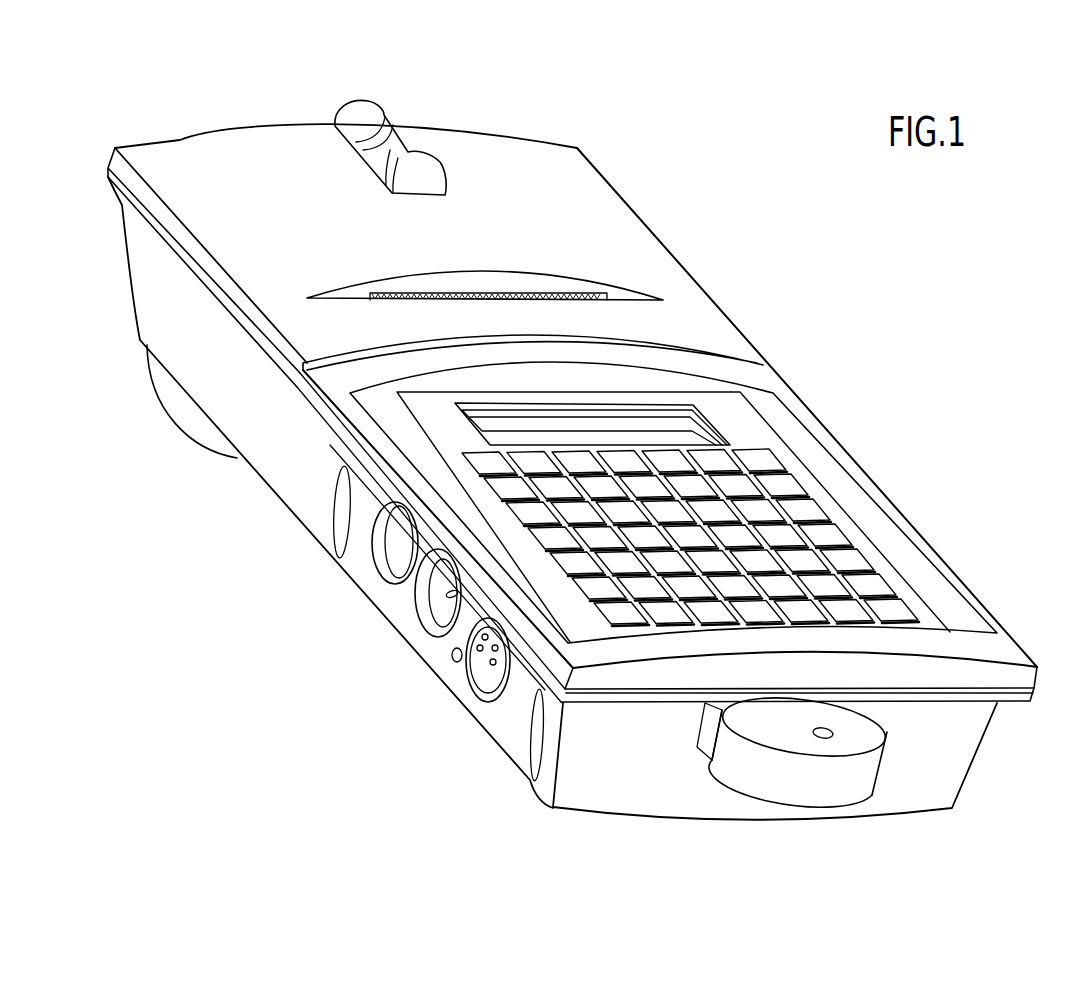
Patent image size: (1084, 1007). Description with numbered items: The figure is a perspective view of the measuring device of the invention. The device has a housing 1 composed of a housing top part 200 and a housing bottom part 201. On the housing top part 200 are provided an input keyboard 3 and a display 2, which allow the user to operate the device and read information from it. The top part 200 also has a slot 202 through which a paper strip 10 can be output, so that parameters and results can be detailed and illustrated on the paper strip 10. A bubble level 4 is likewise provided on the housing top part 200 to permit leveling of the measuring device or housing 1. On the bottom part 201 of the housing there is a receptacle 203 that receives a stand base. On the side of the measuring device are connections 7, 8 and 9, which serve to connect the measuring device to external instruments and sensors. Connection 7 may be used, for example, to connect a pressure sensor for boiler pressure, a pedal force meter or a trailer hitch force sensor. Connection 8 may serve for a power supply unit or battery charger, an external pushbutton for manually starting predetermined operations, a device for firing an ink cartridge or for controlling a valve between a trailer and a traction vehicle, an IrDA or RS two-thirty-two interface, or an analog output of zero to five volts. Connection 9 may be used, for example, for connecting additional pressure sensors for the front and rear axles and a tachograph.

The housing 1 is at (680, 322).
The display 2 is at (665, 437).
The input keyboard 3 is at (758, 563).
The bubble level 4 is at (383, 143).
The connection 7 is at (397, 547).
The connection 8 is at (443, 605).
The connection 9 is at (483, 662).
The paper strip 10 is at (573, 292).
The housing top part 200 is at (587, 183).
The housing bottom part 201 is at (952, 773).
The slot 202 is at (360, 288).
The receptacle 203 is at (745, 768).